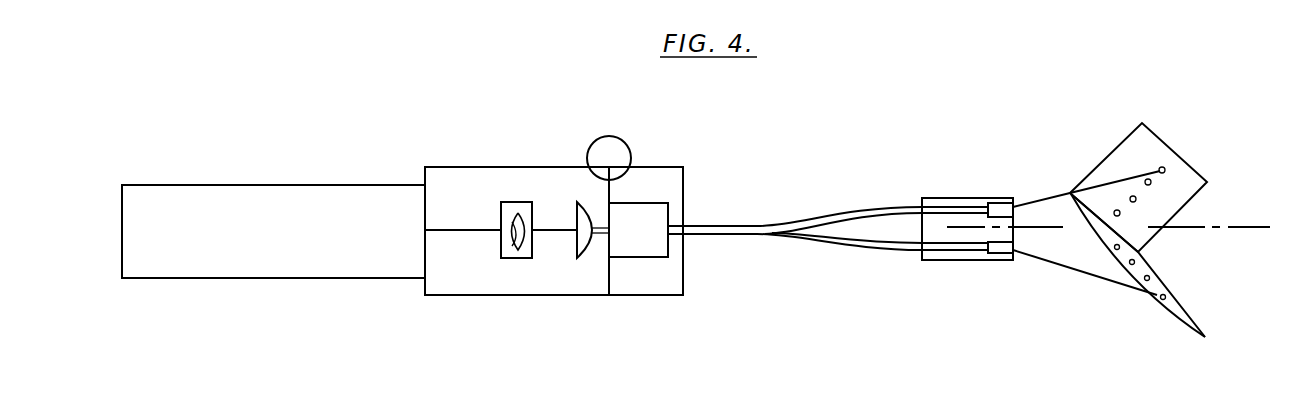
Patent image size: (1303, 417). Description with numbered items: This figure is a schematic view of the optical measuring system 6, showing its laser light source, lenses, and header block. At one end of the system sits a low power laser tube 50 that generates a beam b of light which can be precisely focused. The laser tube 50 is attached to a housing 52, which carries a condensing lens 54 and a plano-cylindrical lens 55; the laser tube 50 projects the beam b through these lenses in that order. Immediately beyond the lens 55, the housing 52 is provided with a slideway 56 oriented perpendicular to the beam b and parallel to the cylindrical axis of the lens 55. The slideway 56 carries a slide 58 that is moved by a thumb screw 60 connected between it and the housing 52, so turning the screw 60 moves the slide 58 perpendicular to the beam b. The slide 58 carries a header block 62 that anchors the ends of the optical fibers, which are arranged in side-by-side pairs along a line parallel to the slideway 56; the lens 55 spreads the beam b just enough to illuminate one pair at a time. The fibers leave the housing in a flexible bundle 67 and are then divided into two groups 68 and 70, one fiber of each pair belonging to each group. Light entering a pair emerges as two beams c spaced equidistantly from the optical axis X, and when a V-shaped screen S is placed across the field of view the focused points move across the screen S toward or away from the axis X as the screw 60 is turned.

The optical measuring system 6 is at (502, 142).
The laser tube 50 is at (288, 263).
The housing 52 is at (455, 290).
The condensing lens 54 is at (505, 260).
The plano-cylindrical lens 55 is at (580, 258).
The slideway 56 is at (611, 204).
The slide 58 is at (671, 172).
The thumb screw 60 is at (607, 147).
The header block 62 is at (653, 248).
The flexible bundle 67 is at (758, 224).
The first fiber group 68 is at (873, 207).
The second fiber group 70 is at (873, 250).
The beam b is at (460, 229).
The beams c is at (1037, 195).
The V-shaped screen S is at (1150, 268).
The optical axis X is at (1119, 227).